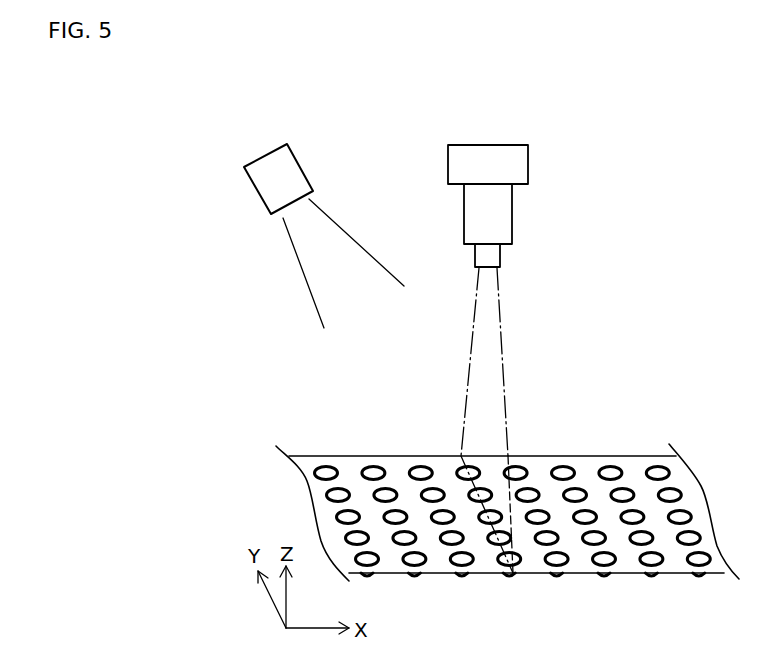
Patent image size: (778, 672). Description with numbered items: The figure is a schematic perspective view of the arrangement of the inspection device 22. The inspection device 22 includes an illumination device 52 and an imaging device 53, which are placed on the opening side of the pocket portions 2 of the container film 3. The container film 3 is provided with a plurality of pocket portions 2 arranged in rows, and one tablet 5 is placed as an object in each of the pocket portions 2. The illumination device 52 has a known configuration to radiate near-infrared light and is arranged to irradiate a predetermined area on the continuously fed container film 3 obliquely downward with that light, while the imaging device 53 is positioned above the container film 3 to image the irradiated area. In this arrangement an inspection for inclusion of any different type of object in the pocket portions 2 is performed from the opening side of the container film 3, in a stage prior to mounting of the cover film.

The inspection device 22 is at (368, 115).
The illumination device 52 is at (265, 153).
The imaging device 53 is at (488, 142).
The container film 3 is at (347, 467).
The pocket portions 2 is at (413, 467).
The tablet 5 is at (420, 473).